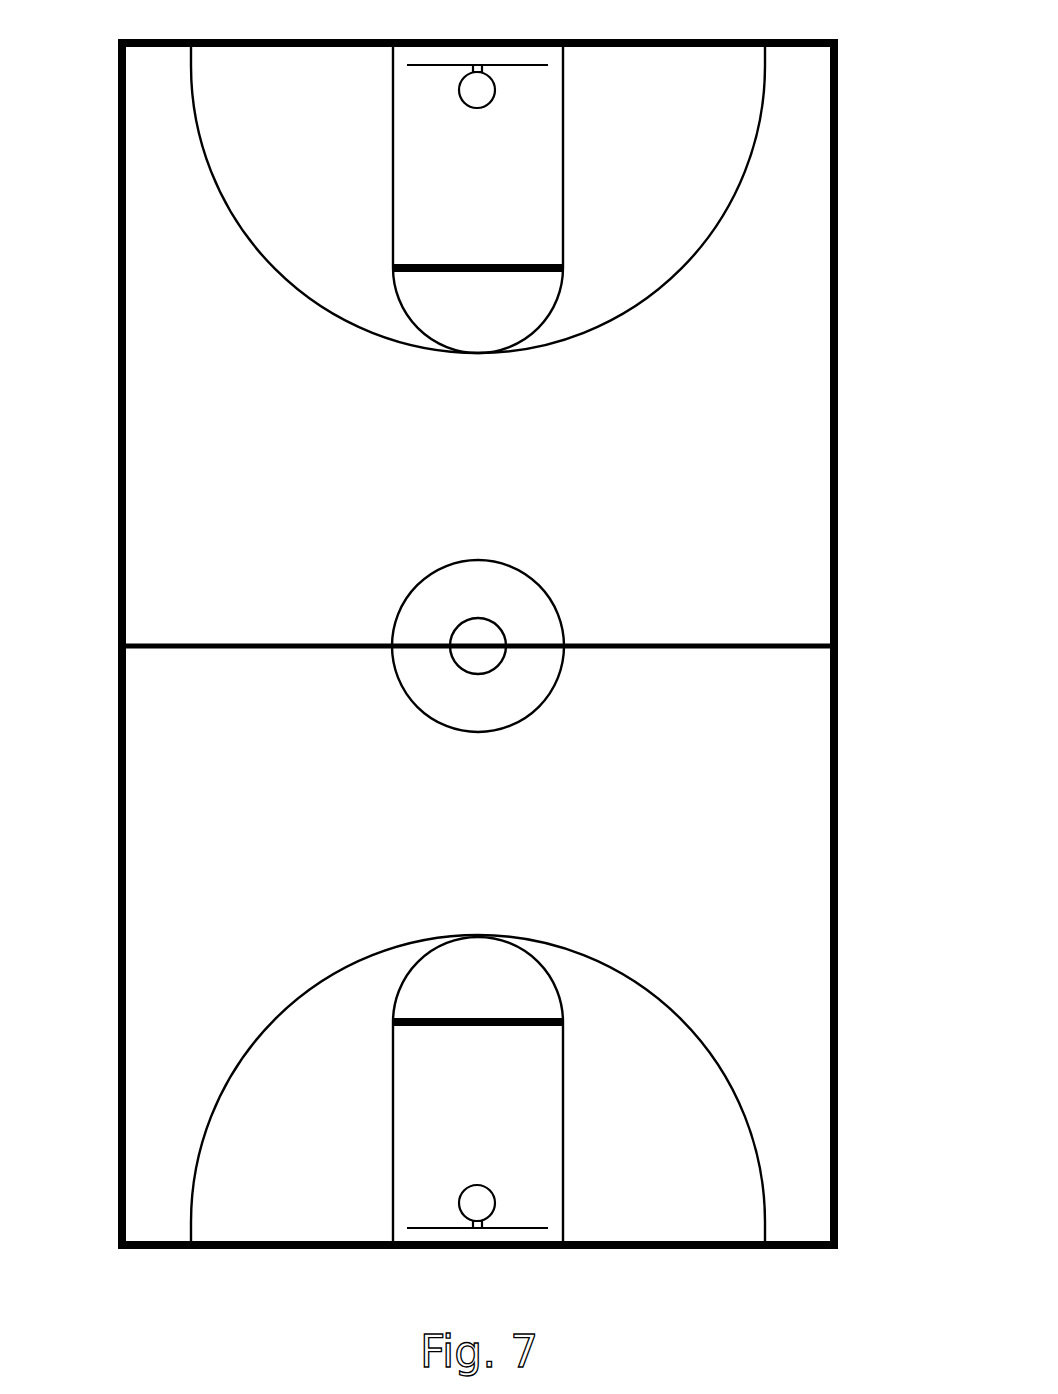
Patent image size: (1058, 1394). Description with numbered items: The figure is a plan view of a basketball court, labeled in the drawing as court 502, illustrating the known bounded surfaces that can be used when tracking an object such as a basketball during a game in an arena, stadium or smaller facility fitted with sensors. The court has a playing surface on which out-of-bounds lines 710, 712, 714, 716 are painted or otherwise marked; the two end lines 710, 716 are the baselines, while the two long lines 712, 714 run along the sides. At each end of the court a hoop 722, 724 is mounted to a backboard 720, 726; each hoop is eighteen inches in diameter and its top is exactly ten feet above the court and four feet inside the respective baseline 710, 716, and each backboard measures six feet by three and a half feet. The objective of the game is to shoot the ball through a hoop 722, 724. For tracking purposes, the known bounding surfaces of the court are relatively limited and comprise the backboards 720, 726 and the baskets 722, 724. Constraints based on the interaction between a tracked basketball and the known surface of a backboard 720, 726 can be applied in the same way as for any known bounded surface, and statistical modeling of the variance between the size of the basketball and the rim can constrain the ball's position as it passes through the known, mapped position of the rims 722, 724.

The court 502 is at (476, 641).
The out-of-bounds line 710 is at (794, 29).
The out-of-bounds line 712 is at (902, 224).
The out-of-bounds line 714 is at (118, 360).
The out-of-bounds line 716 is at (728, 1276).
The backboard 720 is at (493, 68).
The hoop 722 is at (550, 139).
The hoop 724 is at (550, 1181).
The backboard 726 is at (560, 1209).